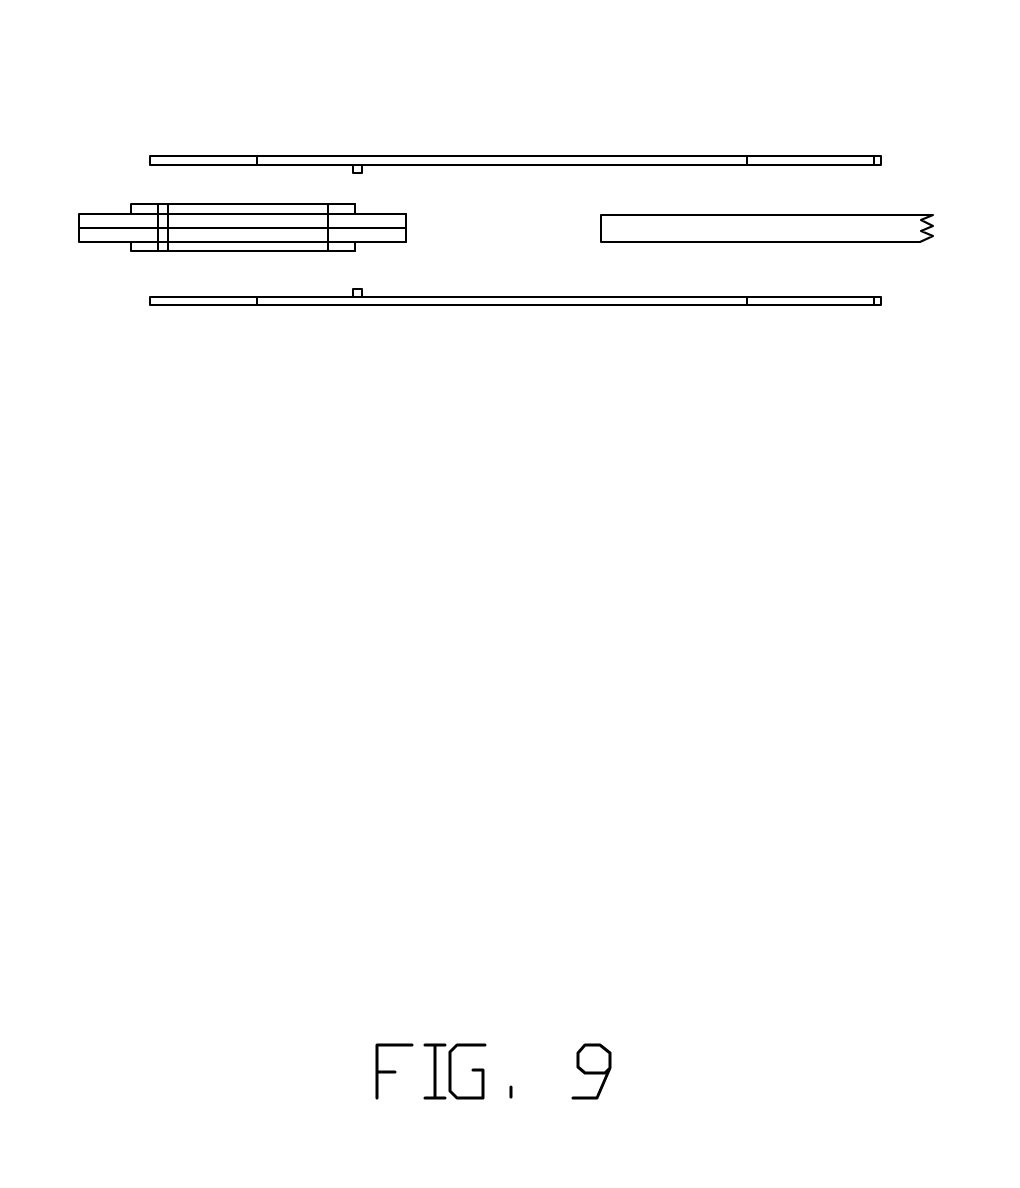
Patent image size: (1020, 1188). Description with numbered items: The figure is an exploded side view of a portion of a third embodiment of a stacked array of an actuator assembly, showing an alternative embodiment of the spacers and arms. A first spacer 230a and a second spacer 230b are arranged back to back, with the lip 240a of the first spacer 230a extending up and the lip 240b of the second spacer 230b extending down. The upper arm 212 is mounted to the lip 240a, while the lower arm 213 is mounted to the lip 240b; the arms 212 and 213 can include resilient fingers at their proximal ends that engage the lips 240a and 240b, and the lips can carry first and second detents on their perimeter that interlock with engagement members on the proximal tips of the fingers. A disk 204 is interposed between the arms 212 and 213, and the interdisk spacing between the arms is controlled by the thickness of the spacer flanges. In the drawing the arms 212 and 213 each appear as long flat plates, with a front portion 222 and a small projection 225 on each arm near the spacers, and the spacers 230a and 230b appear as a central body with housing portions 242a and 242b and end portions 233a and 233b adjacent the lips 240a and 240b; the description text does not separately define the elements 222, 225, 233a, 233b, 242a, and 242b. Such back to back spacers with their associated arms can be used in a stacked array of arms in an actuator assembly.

The disk 204 is at (895, 222).
The arm 212 is at (577, 158).
The arm 213 is at (575, 300).
The shell front portion 222 is at (203, 157).
The latch projection 225 is at (360, 168).
The first spacer 230a is at (88, 222).
The second spacer 230b is at (95, 236).
The upper cable end 233a is at (403, 215).
The lower cable end 233b is at (405, 235).
The lip 240a is at (344, 210).
The lip 240b is at (357, 248).
The upper housing 242a is at (140, 208).
The lower housing 242b is at (153, 246).